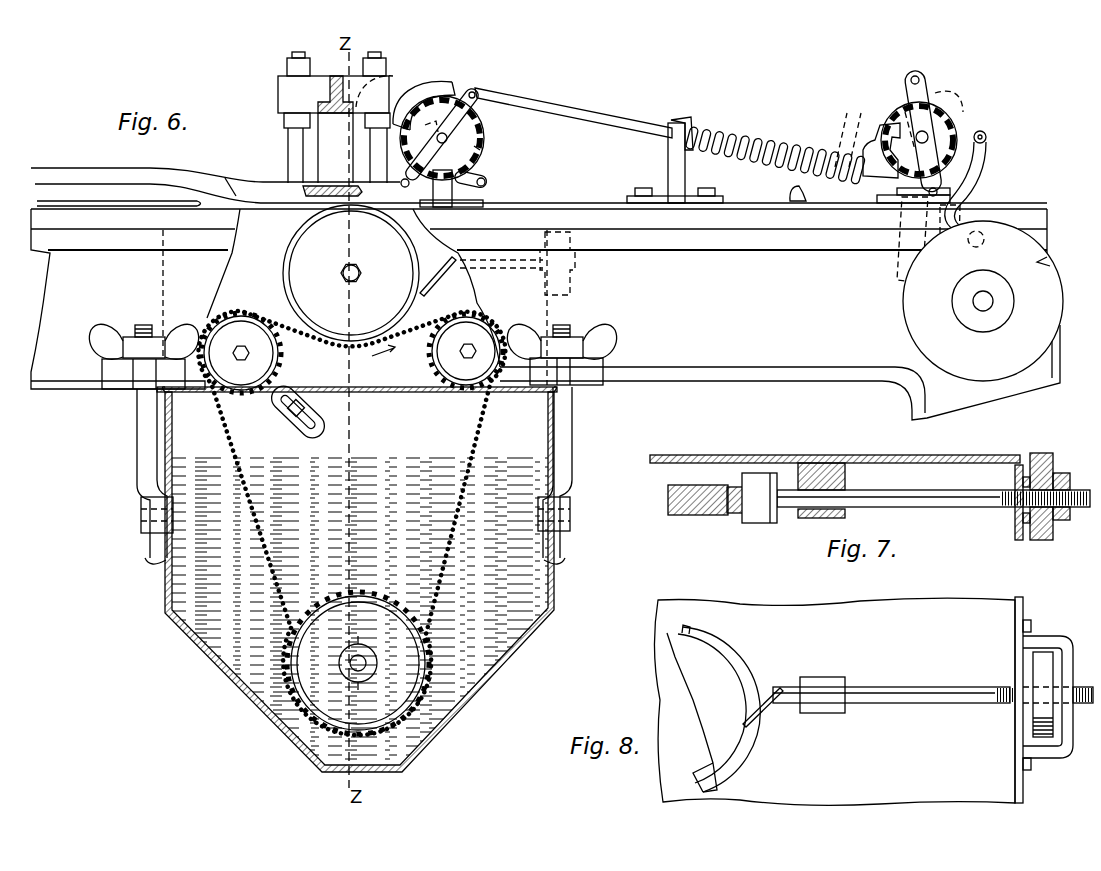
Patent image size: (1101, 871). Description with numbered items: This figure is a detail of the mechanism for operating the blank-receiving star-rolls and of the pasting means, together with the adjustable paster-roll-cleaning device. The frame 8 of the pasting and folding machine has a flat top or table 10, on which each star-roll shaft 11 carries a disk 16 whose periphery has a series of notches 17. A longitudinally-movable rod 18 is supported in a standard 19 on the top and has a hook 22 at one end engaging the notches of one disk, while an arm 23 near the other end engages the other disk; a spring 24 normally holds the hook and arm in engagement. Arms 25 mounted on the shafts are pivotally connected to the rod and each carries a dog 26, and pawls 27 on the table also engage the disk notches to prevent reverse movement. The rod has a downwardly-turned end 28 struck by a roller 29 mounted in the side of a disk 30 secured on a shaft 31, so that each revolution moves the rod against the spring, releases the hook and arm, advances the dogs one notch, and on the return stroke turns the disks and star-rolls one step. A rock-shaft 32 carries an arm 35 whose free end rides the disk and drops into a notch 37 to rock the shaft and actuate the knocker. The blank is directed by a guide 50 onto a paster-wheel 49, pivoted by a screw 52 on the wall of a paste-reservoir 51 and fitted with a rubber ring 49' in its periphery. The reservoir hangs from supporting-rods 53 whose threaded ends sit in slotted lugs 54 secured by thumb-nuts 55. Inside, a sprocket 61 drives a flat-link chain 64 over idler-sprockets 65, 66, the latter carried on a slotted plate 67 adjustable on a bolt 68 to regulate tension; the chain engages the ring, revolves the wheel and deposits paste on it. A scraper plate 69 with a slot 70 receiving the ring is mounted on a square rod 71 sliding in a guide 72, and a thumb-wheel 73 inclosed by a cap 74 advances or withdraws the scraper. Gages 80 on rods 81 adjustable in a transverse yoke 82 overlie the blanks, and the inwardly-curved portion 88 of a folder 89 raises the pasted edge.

In FIG. 6, the frame 8 is at (545, 303).
In FIG. 6, the flat top or table 10 is at (539, 216).
In FIG. 6, the shaft 11 is at (430, 128).
In FIG. 6, the disks 16 is at (480, 137).
In FIG. 6, the notches 17 is at (482, 150).
In FIG. 6, the longitudinally-movable rod 18 is at (631, 124).
In FIG. 6, the standard 19 is at (670, 166).
In FIG. 6, the hook 22 is at (408, 90).
In FIG. 6, the arm 23 is at (874, 152).
In FIG. 6, the spring 24 is at (749, 143).
In FIG. 6, the arms 25 is at (480, 90).
In FIG. 6, the dog 26 is at (402, 185).
In FIG. 6, the pawls 27 is at (489, 177).
In FIG. 6, the downwardly-turned end 28 is at (968, 222).
In FIG. 6, the roller 29 is at (983, 245).
In FIG. 6, the disk 30 is at (983, 301).
In FIG. 6, the shaft 31 is at (992, 305).
In FIG. 6, the rock-shaft 32 is at (988, 136).
In FIG. 6, the arm 35 is at (975, 175).
In FIG. 6, the notch 37 is at (1040, 264).
In FIG. 6, the paster-wheel 49 is at (351, 273).
In FIG. 8, the paster-wheel 49 is at (716, 708).
In FIG. 6, the ring of yielding material 49' is at (351, 273).
In FIG. 7, the ring of yielding material 49' is at (698, 513).
In FIG. 6, the guide 50 is at (323, 187).
In FIG. 6, the paste-reservoir 51 is at (353, 288).
In FIG. 8, the paste-reservoir 51 is at (834, 701).
In FIG. 6, the screw 52 is at (358, 281).
In FIG. 6, the supporting-rods 53 is at (143, 428).
In FIG. 6, the slotted lugs 54 is at (120, 384).
In FIG. 6, the thumb-nuts 55 is at (135, 325).
In FIG. 6, the sprocket 61 is at (407, 680).
In FIG. 6, the chain 64 is at (496, 425).
In FIG. 6, the idler-sprocket 65 is at (466, 351).
In FIG. 6, the idler-sprocket 66 is at (241, 353).
In FIG. 6, the slotted plate 67 is at (298, 400).
In FIG. 6, the bolt 68 is at (288, 416).
In FIG. 6, the plate 69 is at (430, 285).
In FIG. 7, the plate 69 is at (755, 520).
In FIG. 8, the plate 69 is at (748, 712).
In FIG. 7, the slot 70 is at (742, 515).
In FIG. 7, the rod 71 is at (920, 493).
In FIG. 8, the rod 71 is at (905, 693).
In FIG. 7, the guide 72 is at (838, 488).
In FIG. 8, the guide 72 is at (828, 686).
In FIG. 7, the thumb-wheel 73 is at (1038, 453).
In FIG. 8, the thumb-wheel 73 is at (1036, 670).
In FIG. 7, the cap 74 is at (1062, 521).
In FIG. 8, the cap 74 is at (1044, 700).
In FIG. 6, the gages 80 is at (331, 193).
In FIG. 6, the rods 81 is at (296, 152).
In FIG. 6, the transverse yoke 82 is at (333, 94).
In FIG. 6, the inwardly-curved portion 88 is at (121, 176).
In FIG. 6, the folder 89 is at (229, 200).